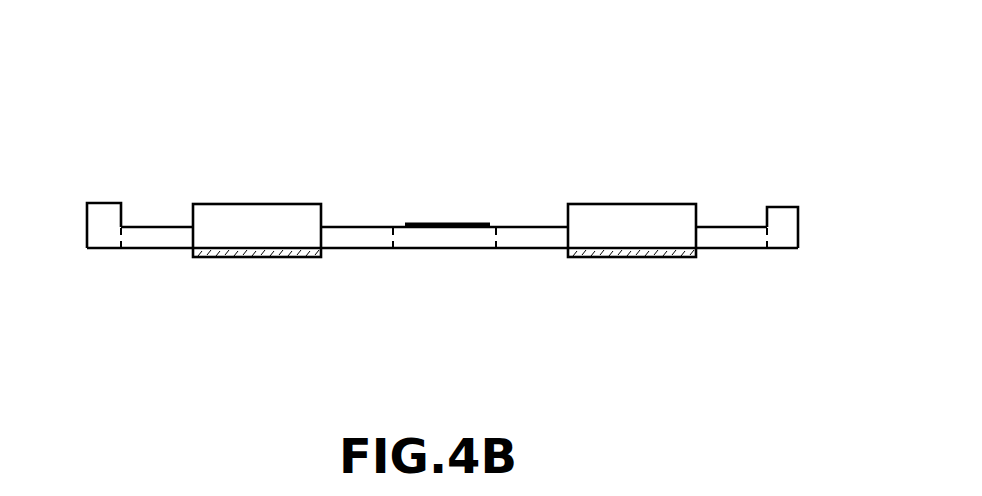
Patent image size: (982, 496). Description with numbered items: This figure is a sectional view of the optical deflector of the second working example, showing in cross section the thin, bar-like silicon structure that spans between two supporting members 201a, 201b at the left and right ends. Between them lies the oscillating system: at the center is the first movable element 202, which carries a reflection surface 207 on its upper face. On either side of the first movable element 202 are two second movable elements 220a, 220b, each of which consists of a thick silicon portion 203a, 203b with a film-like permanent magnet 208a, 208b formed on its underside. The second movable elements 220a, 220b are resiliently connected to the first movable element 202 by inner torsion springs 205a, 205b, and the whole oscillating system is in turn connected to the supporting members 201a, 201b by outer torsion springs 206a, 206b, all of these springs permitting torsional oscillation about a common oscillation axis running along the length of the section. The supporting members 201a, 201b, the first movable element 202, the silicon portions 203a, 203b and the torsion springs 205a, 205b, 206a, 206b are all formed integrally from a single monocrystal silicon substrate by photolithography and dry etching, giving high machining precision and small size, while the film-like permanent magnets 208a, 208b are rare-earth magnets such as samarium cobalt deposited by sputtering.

The supporting member 201a is at (103, 212).
The supporting member 201b is at (788, 250).
The first movable element 202 is at (453, 240).
The silicon portion 203a is at (275, 215).
The silicon portion 203b is at (645, 218).
The torsion spring 205a is at (370, 238).
The torsion spring 205b is at (538, 238).
The torsion spring 206a is at (152, 237).
The torsion spring 206b is at (720, 227).
The reflection surface 207 is at (457, 222).
The film-like permanent magnet 208a is at (242, 252).
The film-like permanent magnet 208b is at (622, 250).
The second movable element 220a is at (332, 122).
The second movable element 220b is at (716, 122).